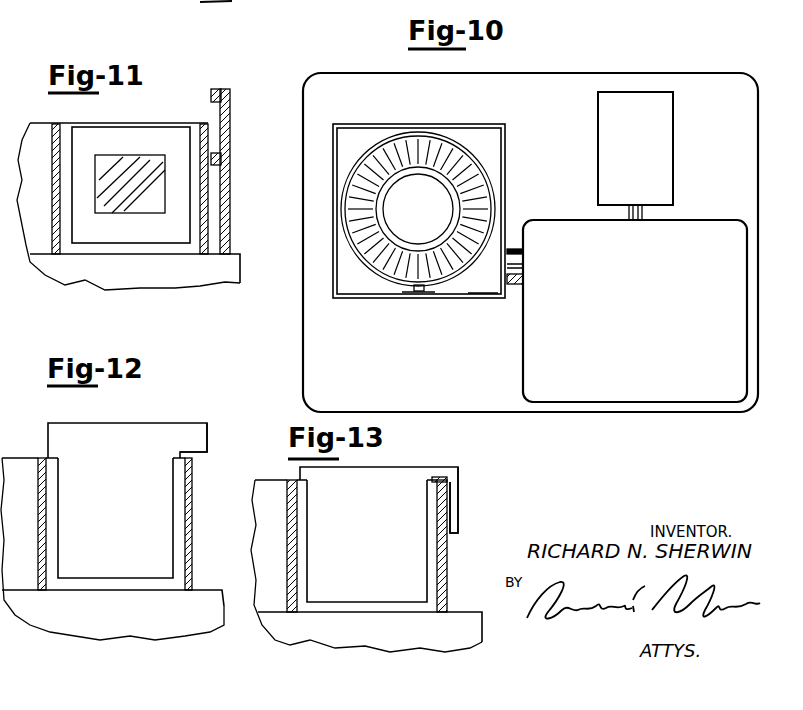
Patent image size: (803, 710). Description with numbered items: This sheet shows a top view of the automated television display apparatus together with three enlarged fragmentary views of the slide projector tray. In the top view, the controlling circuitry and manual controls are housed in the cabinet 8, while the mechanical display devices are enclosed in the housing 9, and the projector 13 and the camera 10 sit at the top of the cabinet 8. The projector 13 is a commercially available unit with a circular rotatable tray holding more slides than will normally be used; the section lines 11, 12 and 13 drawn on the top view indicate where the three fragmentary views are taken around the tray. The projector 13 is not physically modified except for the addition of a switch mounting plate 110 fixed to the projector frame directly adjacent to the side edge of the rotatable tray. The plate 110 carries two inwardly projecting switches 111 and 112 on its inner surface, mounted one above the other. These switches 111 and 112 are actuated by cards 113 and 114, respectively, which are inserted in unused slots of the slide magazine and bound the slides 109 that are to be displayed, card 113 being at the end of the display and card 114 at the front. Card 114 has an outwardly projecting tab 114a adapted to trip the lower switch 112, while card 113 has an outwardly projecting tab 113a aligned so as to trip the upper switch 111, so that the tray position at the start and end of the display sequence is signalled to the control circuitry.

In FIG. 10, the cabinet 8 is at (301, 317).
In FIG. 10, the housing 9 is at (521, 346).
In FIG. 10, the camera 10 is at (675, 149).
In FIG. 10, the section line 11— 11 is at (431, 236).
In FIG. 10, the section line 12— 12 is at (353, 267).
In FIG. 10, the projector 13 is at (508, 147).
In FIG. 11, the slides 109 is at (134, 140).
In FIG. 10, the switch mounting plate 110 is at (403, 296).
In FIG. 11, the switch mounting plate 110 is at (229, 131).
In FIG. 11, the switch 111 is at (209, 94).
In FIG. 11, the switch 112 is at (229, 166).
In FIG. 12, the card 113 is at (184, 430).
In FIG. 12, the tab 113a is at (251, 479).
In FIG. 13, the card 114 is at (421, 474).
In FIG. 13, the tab 114a is at (516, 525).